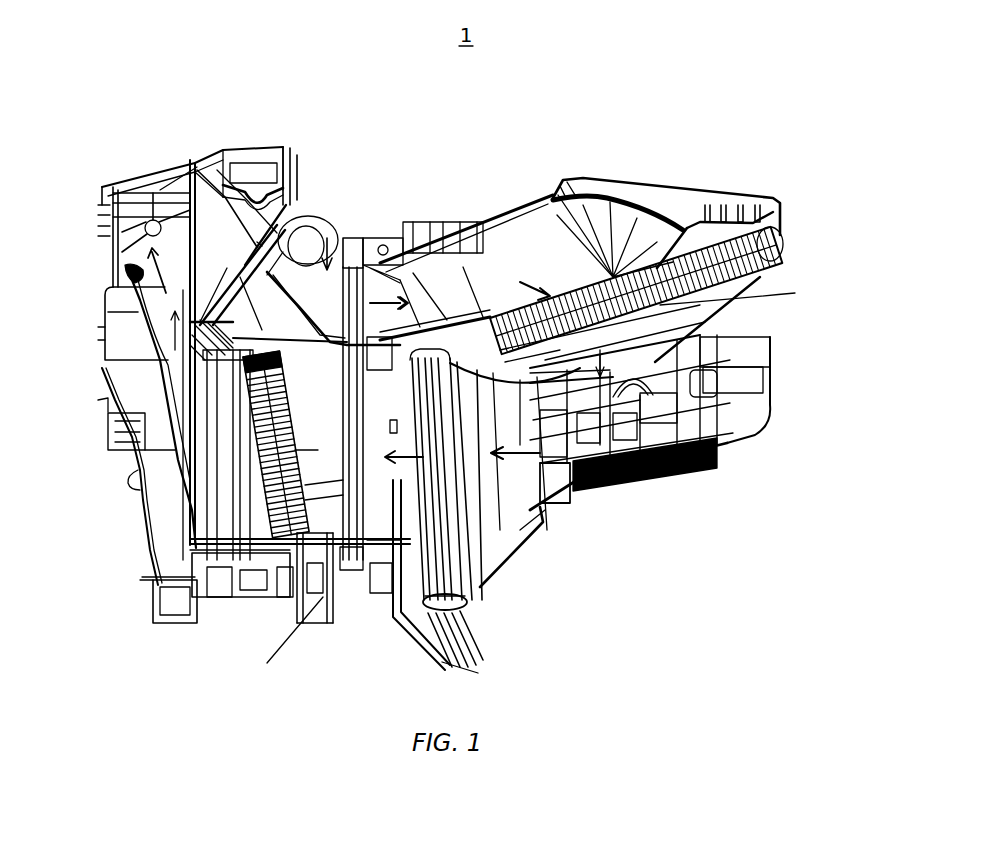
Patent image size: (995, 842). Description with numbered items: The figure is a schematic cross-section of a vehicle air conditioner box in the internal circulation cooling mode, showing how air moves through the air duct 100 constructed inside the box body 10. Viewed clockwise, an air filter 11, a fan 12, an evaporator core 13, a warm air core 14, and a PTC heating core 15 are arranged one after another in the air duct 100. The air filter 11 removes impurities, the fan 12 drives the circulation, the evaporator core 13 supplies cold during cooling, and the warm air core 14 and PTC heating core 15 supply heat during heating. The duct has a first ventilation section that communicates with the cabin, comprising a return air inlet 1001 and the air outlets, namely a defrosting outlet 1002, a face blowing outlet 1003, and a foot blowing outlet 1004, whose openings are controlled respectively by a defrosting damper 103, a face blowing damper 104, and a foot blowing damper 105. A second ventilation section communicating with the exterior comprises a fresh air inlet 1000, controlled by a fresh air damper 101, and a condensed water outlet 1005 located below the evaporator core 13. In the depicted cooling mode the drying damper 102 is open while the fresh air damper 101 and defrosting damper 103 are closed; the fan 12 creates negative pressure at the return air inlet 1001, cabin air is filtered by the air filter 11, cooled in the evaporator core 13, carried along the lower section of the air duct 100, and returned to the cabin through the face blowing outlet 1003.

The box body 10 is at (487, 220).
The air filter 11 is at (793, 293).
The fan 12 is at (767, 390).
The evaporator core 13 is at (468, 557).
The warm air core 14 is at (303, 613).
The PTC heating core 15 is at (230, 580).
The air duct 100 is at (390, 560).
The fresh air damper 101 is at (610, 198).
The drying damper 102 is at (300, 227).
The defrosting damper 103 is at (250, 270).
The face blowing damper 104 is at (143, 197).
The foot blowing damper 105 is at (110, 307).
The fresh air inlet 1000 is at (663, 198).
The return air inlet 1001 is at (323, 233).
The defrosting outlet 1002 is at (240, 160).
The face blowing outlet 1003 is at (187, 167).
The foot blowing outlet 1004 is at (153, 597).
The condensed water outlet 1005 is at (470, 663).